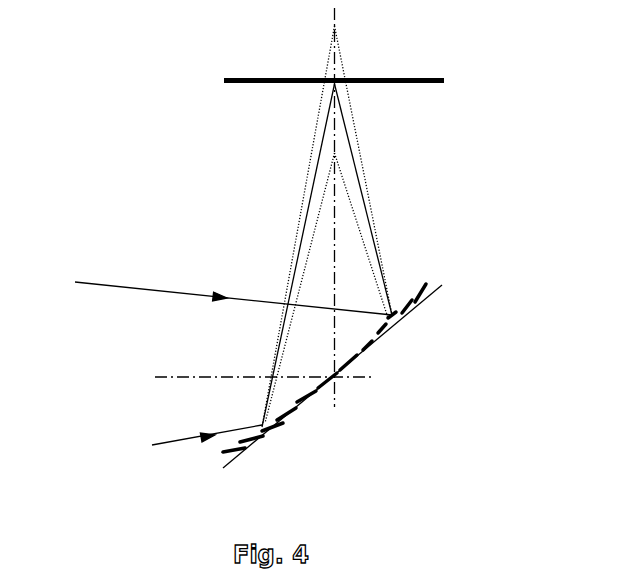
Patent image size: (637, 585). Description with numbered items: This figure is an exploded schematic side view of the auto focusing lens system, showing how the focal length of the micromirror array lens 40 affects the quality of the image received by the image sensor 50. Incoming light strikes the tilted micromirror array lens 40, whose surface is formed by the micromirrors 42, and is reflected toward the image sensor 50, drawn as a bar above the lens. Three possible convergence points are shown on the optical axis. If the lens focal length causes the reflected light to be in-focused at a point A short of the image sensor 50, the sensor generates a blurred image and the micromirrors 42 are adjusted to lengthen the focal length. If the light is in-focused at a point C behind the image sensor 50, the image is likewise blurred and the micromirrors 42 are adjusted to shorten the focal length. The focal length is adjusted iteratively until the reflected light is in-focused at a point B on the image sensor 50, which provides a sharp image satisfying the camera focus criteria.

The micromirror array lens 40 is at (368, 347).
The micromirrors 42 is at (423, 302).
The image sensor 50 is at (413, 83).
The point A is at (334, 153).
The point B is at (334, 84).
The point C is at (334, 26).